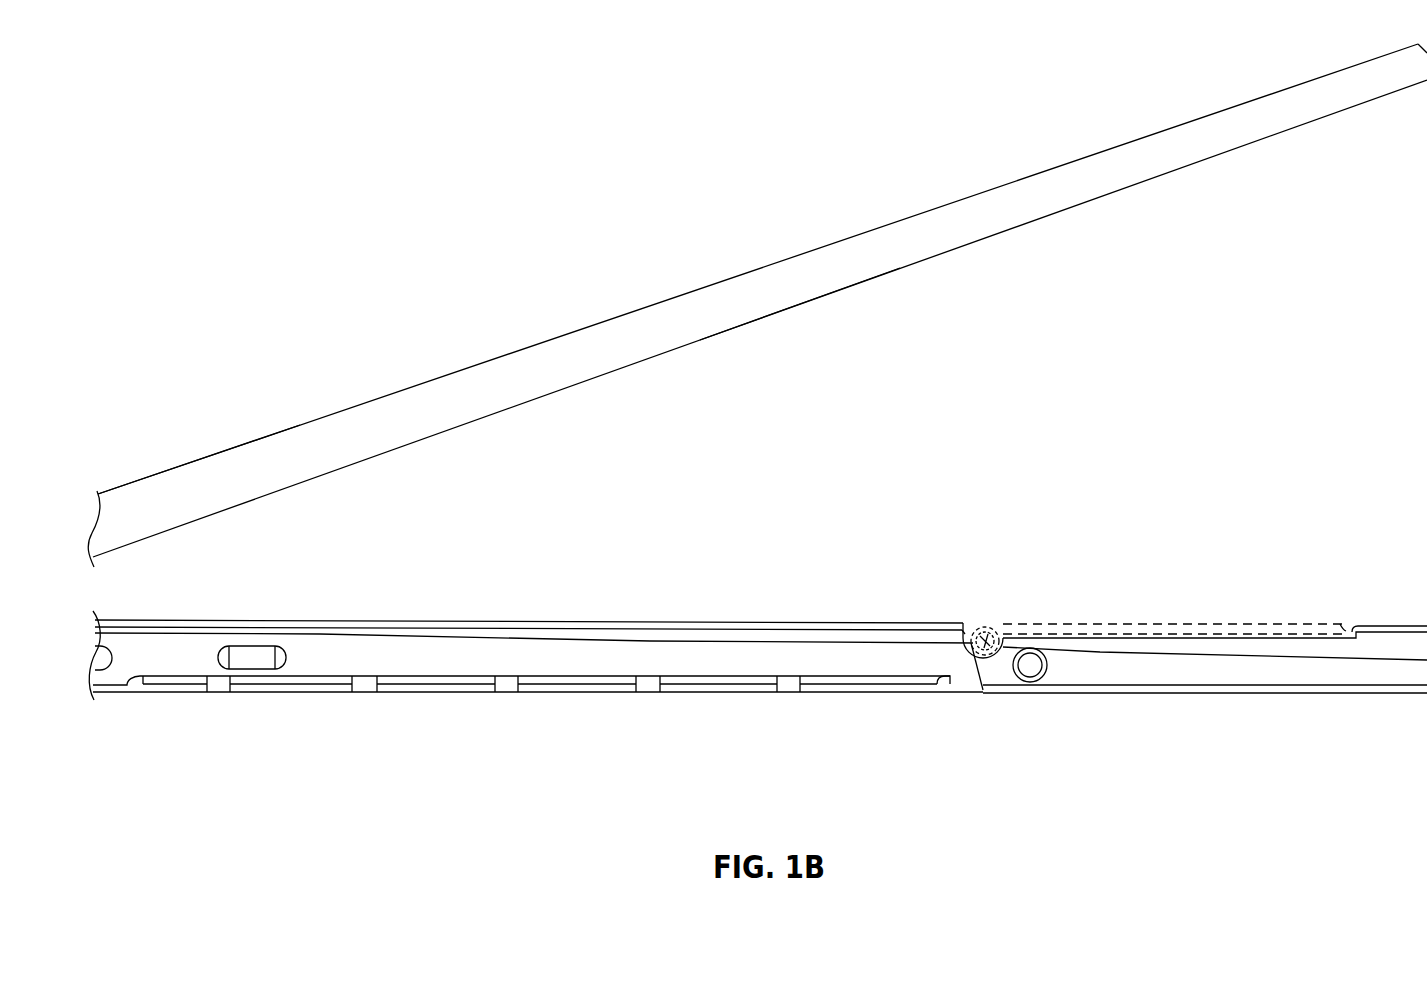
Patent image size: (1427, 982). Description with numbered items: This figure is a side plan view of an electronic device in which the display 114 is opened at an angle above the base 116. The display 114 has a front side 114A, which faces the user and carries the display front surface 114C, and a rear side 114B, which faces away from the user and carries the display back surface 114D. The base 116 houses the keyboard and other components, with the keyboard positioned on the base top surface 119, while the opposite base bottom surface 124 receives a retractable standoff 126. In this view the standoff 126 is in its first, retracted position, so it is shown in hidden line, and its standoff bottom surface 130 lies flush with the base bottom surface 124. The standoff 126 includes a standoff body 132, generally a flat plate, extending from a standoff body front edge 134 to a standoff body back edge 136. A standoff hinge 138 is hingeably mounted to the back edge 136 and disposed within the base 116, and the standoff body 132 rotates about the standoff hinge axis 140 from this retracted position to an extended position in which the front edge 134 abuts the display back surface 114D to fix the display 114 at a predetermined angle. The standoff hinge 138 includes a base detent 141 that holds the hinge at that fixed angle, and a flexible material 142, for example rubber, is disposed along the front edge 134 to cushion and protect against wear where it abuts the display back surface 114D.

The display 114 is at (757, 305).
The front side 114A is at (565, 338).
The rear side 114B is at (583, 383).
The display front surface 114C is at (488, 362).
The display back surface 114D is at (718, 335).
The base 116 is at (680, 627).
The base top surface 119 is at (1125, 695).
The base bottom surface 124 is at (536, 630).
The retractable standoff 126 is at (1215, 605).
The standoff bottom surface 130 is at (1282, 627).
The standoff body 132 is at (1073, 628).
The standoff body front edge 134 is at (1349, 631).
The standoff body back edge 136 is at (988, 625).
The standoff hinge 138 is at (985, 628).
The standoff hinge axis 140 is at (985, 655).
The base detent 141 is at (970, 637).
The flexible material 142 is at (1334, 625).